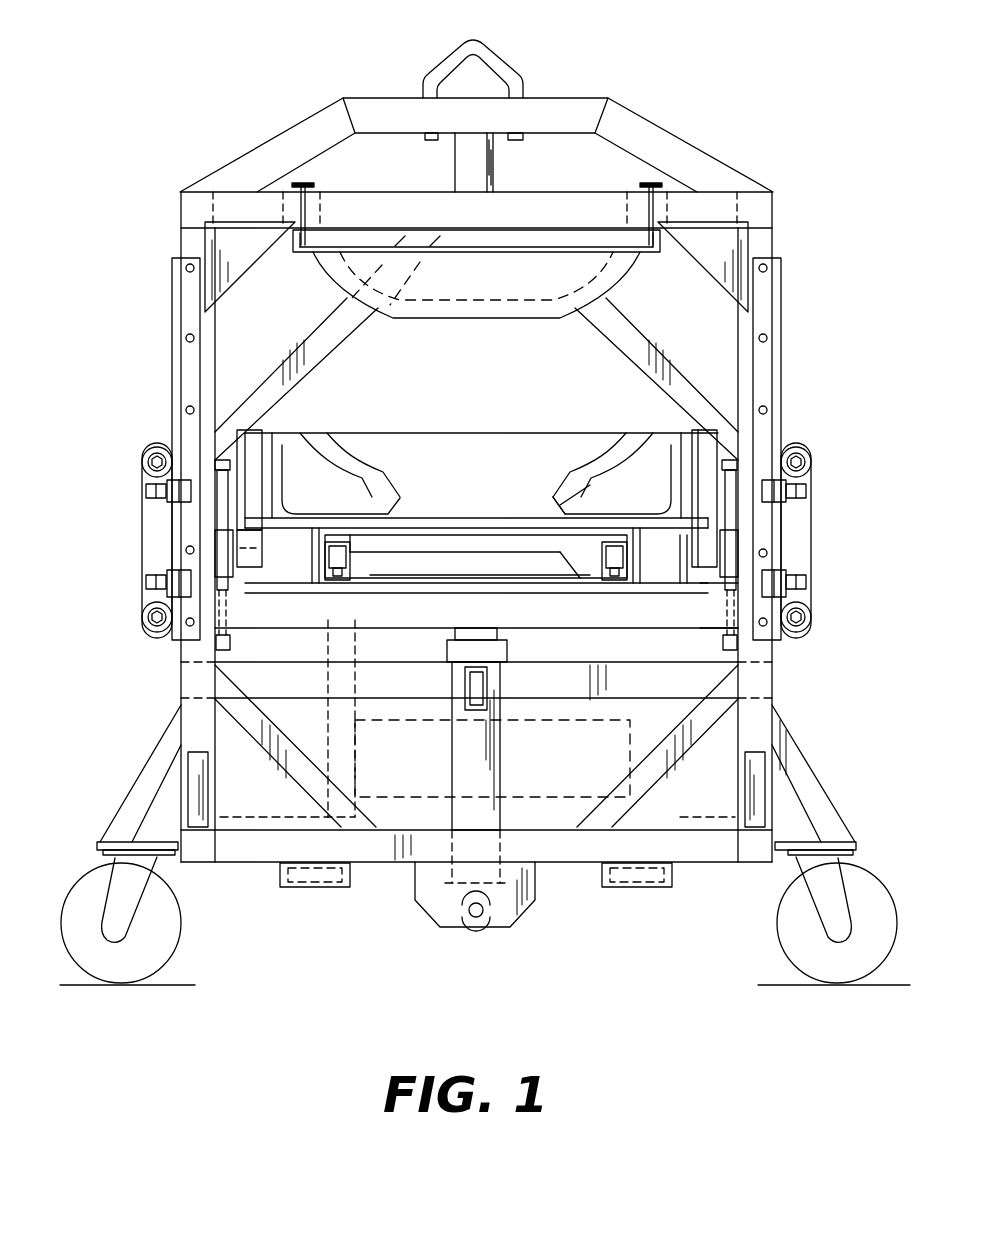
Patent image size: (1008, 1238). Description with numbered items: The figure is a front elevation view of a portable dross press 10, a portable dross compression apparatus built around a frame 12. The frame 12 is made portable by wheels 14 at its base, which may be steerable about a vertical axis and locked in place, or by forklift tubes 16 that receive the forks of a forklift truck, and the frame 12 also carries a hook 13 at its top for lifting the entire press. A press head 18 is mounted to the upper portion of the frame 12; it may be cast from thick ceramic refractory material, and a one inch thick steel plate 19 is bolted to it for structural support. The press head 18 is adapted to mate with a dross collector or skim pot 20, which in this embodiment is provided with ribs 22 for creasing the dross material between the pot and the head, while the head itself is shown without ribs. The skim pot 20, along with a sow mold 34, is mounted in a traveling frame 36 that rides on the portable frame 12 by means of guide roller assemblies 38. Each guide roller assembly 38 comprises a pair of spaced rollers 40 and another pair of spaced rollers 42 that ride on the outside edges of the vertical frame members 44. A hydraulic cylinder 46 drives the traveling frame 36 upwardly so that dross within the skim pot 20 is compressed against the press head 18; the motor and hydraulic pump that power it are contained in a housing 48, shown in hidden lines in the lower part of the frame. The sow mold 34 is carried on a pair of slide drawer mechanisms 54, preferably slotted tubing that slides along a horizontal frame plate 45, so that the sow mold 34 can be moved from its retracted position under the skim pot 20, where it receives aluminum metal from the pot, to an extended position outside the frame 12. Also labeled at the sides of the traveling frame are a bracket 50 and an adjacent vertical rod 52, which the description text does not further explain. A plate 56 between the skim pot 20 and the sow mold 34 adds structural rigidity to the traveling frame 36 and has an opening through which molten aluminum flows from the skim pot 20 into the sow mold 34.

The portable dross press 10 is at (662, 120).
The frame 12 is at (183, 190).
The hook 13 is at (494, 53).
The wheels 14 is at (176, 958).
The forklift tubes 16 is at (330, 890).
The press head 18 is at (628, 273).
The steel plate 19 is at (585, 247).
The skim pot 20 is at (388, 433).
The ribs 22 is at (388, 480).
The sow mold 34 is at (583, 565).
The traveling frame 36 is at (818, 553).
The guide roller assemblies 38 is at (808, 585).
The spaced rollers 40 is at (766, 575).
The spaced rollers 42 is at (798, 446).
The vertical frame members 44 is at (172, 288).
The horizontal frame plate 45 is at (712, 600).
The hydraulic cylinder 46 is at (503, 762).
The housing 48 is at (630, 748).
The bracket 50 is at (248, 560).
The adjustment rod 52 is at (222, 545).
The slide drawer mechanisms 54 is at (332, 580).
The plate 56 is at (607, 517).